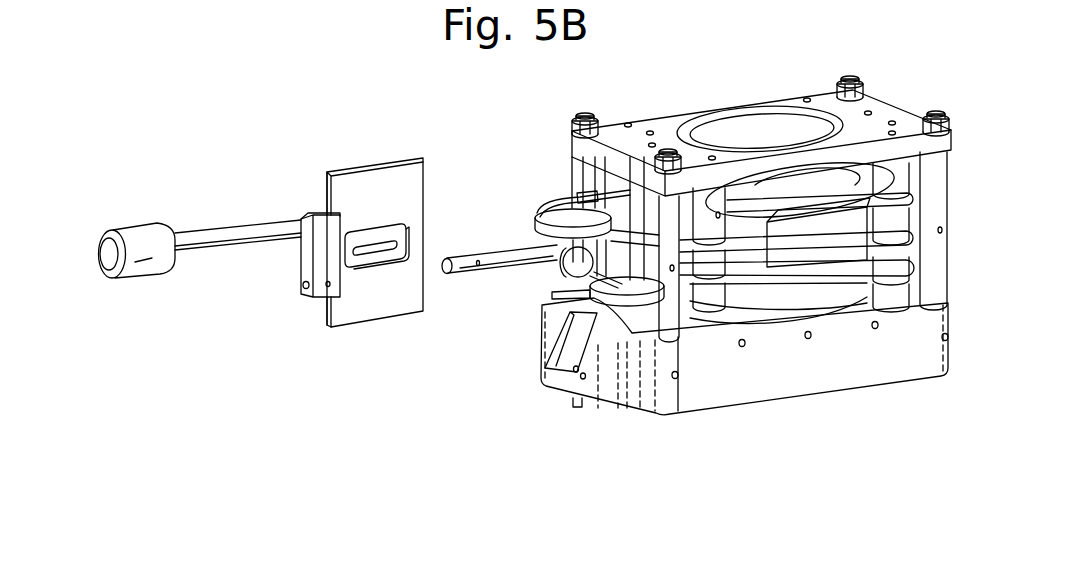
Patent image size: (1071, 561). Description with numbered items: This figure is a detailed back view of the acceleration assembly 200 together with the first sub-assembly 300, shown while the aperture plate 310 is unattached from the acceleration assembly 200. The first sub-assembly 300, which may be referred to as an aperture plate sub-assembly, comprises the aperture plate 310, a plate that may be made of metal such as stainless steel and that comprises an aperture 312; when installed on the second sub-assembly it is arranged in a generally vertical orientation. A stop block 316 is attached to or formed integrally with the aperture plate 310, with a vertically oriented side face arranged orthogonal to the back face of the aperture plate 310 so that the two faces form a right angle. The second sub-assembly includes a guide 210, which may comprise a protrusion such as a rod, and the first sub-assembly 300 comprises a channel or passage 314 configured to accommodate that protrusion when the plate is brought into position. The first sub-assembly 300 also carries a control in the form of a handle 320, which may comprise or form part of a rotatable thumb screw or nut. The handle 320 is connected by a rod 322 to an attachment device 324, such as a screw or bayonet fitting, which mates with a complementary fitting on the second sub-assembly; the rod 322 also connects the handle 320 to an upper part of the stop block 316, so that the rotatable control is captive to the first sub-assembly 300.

The acceleration assembly 200 is at (828, 420).
The guide 210 is at (492, 257).
The first sub-assembly 300 is at (238, 374).
The aperture plate 310 is at (400, 306).
The aperture 312 is at (375, 238).
The channel or passage 314 is at (304, 294).
The stop block 316 is at (299, 267).
The handle 320 is at (143, 275).
The rod 322 is at (196, 236).
The attachment device 324 is at (342, 220).